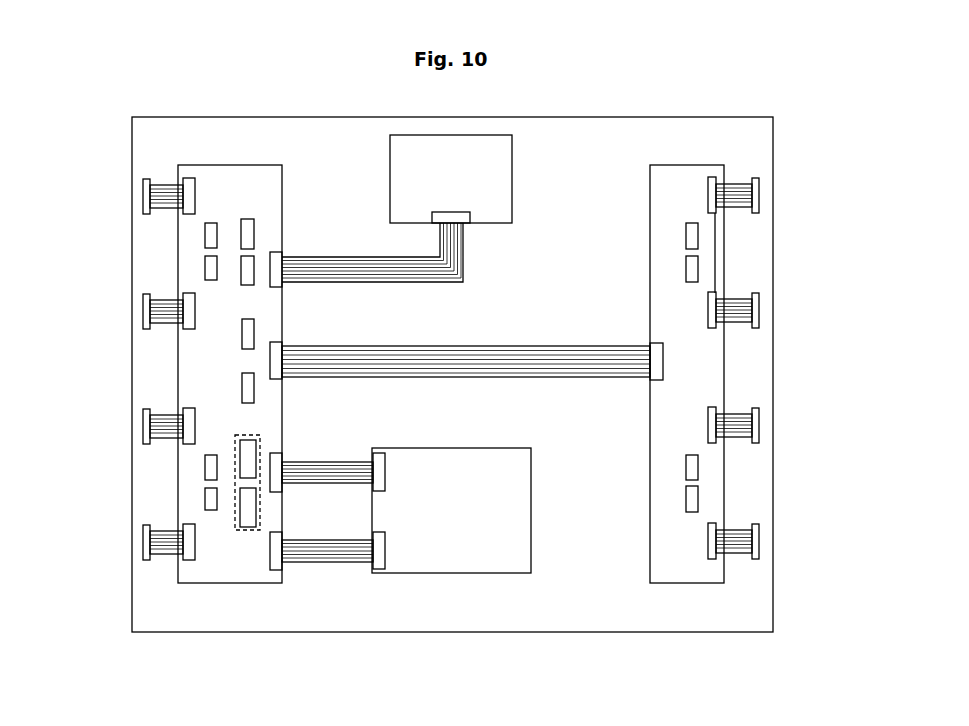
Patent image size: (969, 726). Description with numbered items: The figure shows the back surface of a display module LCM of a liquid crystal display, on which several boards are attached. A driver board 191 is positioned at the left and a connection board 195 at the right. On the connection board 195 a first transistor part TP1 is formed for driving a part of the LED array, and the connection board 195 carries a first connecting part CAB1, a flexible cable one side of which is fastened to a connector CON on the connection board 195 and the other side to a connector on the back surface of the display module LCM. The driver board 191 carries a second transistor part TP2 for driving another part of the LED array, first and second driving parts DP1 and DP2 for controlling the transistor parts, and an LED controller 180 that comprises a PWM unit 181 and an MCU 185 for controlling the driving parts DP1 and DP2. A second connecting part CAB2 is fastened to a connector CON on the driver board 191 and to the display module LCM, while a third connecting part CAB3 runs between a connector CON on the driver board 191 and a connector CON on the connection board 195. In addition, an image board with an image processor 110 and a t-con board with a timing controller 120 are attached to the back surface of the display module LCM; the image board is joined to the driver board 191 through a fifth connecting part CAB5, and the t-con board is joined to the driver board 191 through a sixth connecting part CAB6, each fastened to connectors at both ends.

The image processor 110 is at (468, 536).
The timing controller 120 is at (466, 184).
The LED controller 180 is at (249, 532).
The PWM unit 181 is at (245, 512).
The MCU 185 is at (250, 447).
The driver board 191 is at (186, 583).
The connection board 195 is at (690, 583).
The display module LCM is at (467, 632).
The connector CON is at (150, 195).
The first connecting part CAB1 is at (737, 182).
The second connecting part CAB2 is at (166, 182).
The third connecting part CAB3 is at (480, 380).
The fifth connecting part CAB5 is at (355, 481).
The sixth connecting part CAB6 is at (463, 265).
The first transistor part TP1 is at (698, 270).
The second transistor part TP2 is at (211, 270).
The first driving part DP1 is at (252, 272).
The second driving part DP2 is at (256, 388).